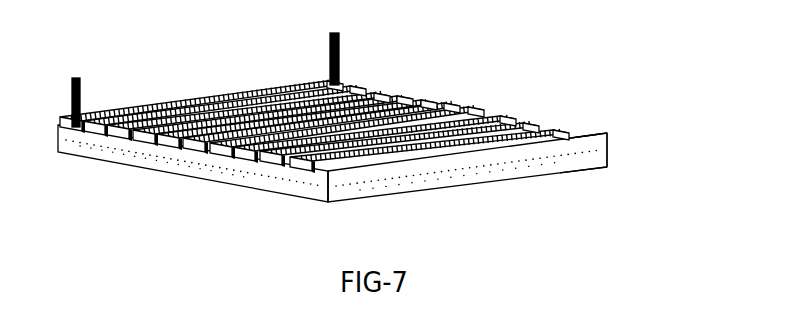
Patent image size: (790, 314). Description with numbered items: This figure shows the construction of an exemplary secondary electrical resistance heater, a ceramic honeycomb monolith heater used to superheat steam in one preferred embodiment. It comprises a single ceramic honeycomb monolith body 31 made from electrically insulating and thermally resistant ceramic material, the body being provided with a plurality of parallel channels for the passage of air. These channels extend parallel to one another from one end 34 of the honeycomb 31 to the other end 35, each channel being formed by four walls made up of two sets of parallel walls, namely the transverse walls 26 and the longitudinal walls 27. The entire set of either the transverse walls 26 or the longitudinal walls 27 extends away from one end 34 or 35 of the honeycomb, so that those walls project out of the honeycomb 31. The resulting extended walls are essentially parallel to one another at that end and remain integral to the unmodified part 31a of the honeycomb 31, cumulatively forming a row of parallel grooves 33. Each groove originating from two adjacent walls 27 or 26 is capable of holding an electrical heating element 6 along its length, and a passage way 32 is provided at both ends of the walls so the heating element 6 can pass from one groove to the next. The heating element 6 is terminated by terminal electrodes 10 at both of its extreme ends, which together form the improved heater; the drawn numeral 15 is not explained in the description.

The electrical heating element 6 is at (531, 126).
The terminal electrodes 10 is at (370, 59).
The post 15 is at (135, 110).
The transverse walls 26 is at (305, 207).
The longitudinal walls 27 is at (607, 126).
The ceramic honeycomb monolith body 31 is at (393, 194).
The unmodified part of the honeycomb 31a is at (455, 167).
The passage way 32 is at (554, 120).
The row of parallel grooves 33 is at (582, 125).
The one end of the honeycomb 34 is at (617, 130).
The other end of the honeycomb 35 is at (617, 165).